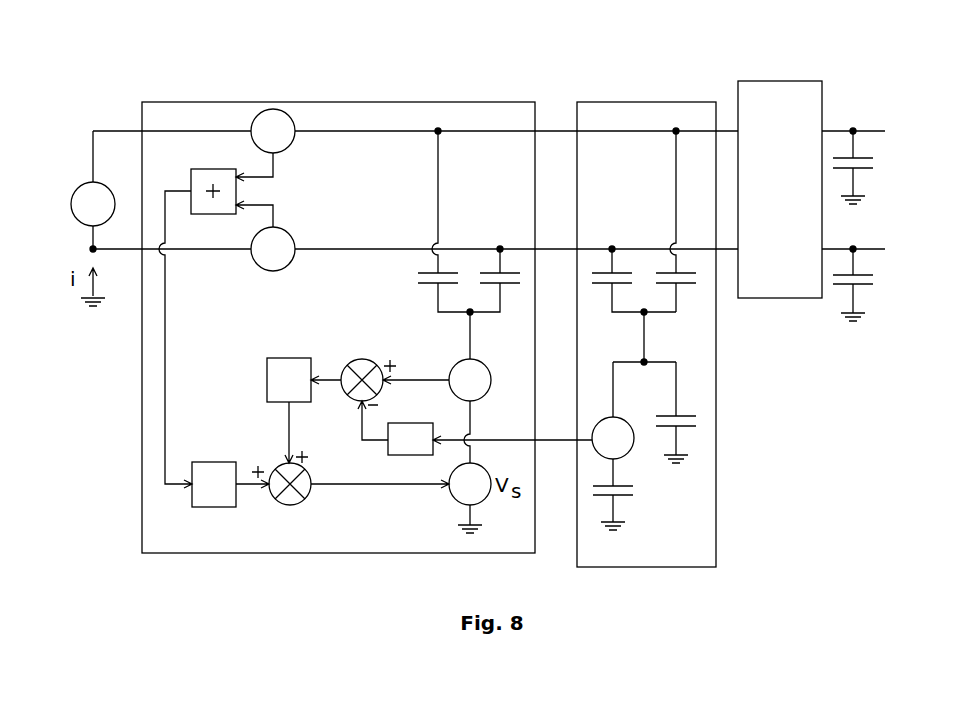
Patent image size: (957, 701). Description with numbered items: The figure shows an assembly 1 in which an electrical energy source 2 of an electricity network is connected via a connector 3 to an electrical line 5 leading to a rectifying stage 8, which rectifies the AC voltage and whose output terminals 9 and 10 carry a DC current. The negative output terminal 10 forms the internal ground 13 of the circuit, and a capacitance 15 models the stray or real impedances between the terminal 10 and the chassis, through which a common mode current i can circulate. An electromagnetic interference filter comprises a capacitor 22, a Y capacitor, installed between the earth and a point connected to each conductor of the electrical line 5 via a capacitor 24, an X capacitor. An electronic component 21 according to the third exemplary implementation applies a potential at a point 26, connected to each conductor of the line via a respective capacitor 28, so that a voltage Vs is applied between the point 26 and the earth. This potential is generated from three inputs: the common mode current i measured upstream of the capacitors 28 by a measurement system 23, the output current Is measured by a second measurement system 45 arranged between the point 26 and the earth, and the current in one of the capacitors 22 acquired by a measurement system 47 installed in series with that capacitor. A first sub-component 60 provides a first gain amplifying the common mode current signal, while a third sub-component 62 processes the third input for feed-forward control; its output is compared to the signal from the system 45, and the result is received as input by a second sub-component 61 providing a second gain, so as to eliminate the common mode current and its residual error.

The assembly 1 is at (84, 62).
The electrical energy source 2 is at (80, 194).
The connector 3 is at (140, 249).
The electrical line 5 is at (322, 137).
The rectifying stage 8 is at (786, 283).
The output terminal 9 is at (853, 131).
The output terminal 10 is at (872, 249).
The internal ground 13 is at (853, 249).
The capacitance 15 is at (870, 284).
The electronic component 21 is at (397, 350).
The capacitor 22 is at (690, 420).
The measurement system 23 is at (273, 109).
The capacitor 24 is at (688, 280).
The point 26 is at (470, 316).
The capacitor 28 is at (438, 283).
The second measurement system 45 is at (491, 373).
The measurement system 47 is at (600, 448).
The first sub-component 60 is at (212, 507).
The second sub-component 61 is at (267, 372).
The third sub-component 62 is at (408, 455).